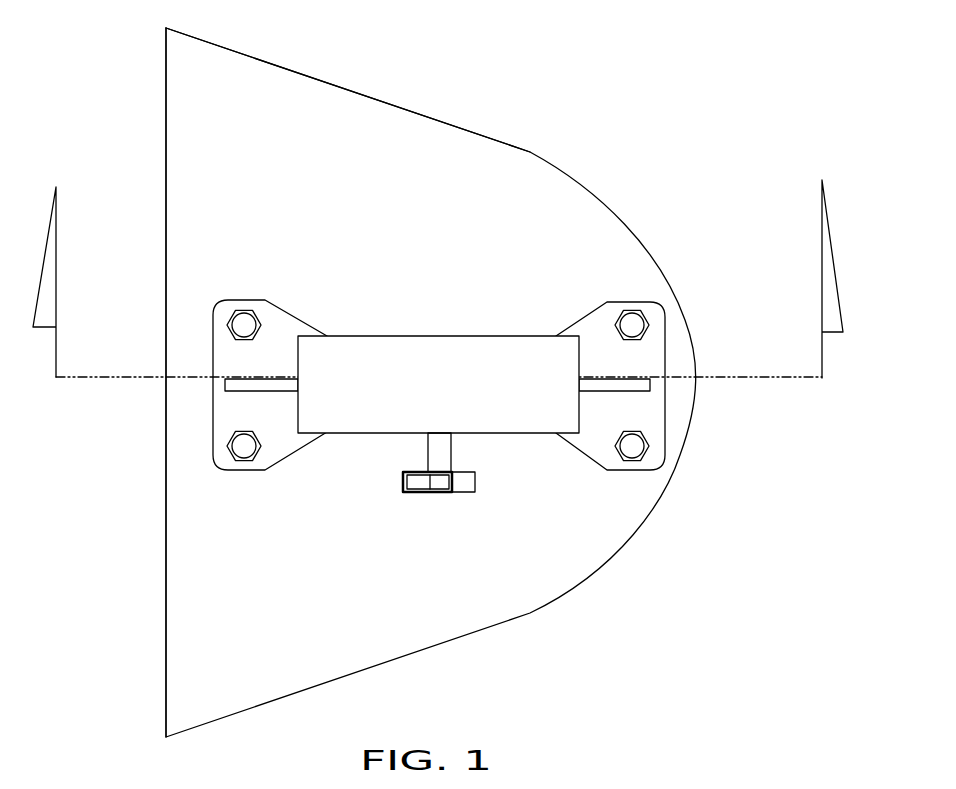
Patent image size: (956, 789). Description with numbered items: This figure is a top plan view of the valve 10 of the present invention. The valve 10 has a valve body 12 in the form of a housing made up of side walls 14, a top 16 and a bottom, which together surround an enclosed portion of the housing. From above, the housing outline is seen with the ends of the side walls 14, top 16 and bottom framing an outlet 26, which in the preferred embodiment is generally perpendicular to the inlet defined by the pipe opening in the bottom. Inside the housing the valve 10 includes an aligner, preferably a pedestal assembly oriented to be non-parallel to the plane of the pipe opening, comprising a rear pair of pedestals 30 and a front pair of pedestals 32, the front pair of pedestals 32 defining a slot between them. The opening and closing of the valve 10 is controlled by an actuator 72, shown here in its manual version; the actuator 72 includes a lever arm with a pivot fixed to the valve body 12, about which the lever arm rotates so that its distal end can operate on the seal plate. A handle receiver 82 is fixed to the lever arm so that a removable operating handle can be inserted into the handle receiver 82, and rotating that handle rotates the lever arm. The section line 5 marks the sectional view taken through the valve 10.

The valve 10 is at (671, 107).
The valve body 12 is at (275, 113).
The side walls 14 is at (438, 103).
The top 16 is at (421, 218).
The outlet 26 is at (128, 525).
The rear pair of pedestals 30 is at (647, 280).
The front pair of pedestals 32 is at (262, 279).
The section line 5- 5 is at (438, 260).
The actuator 72 is at (492, 499).
The handle receiver 82 is at (427, 482).